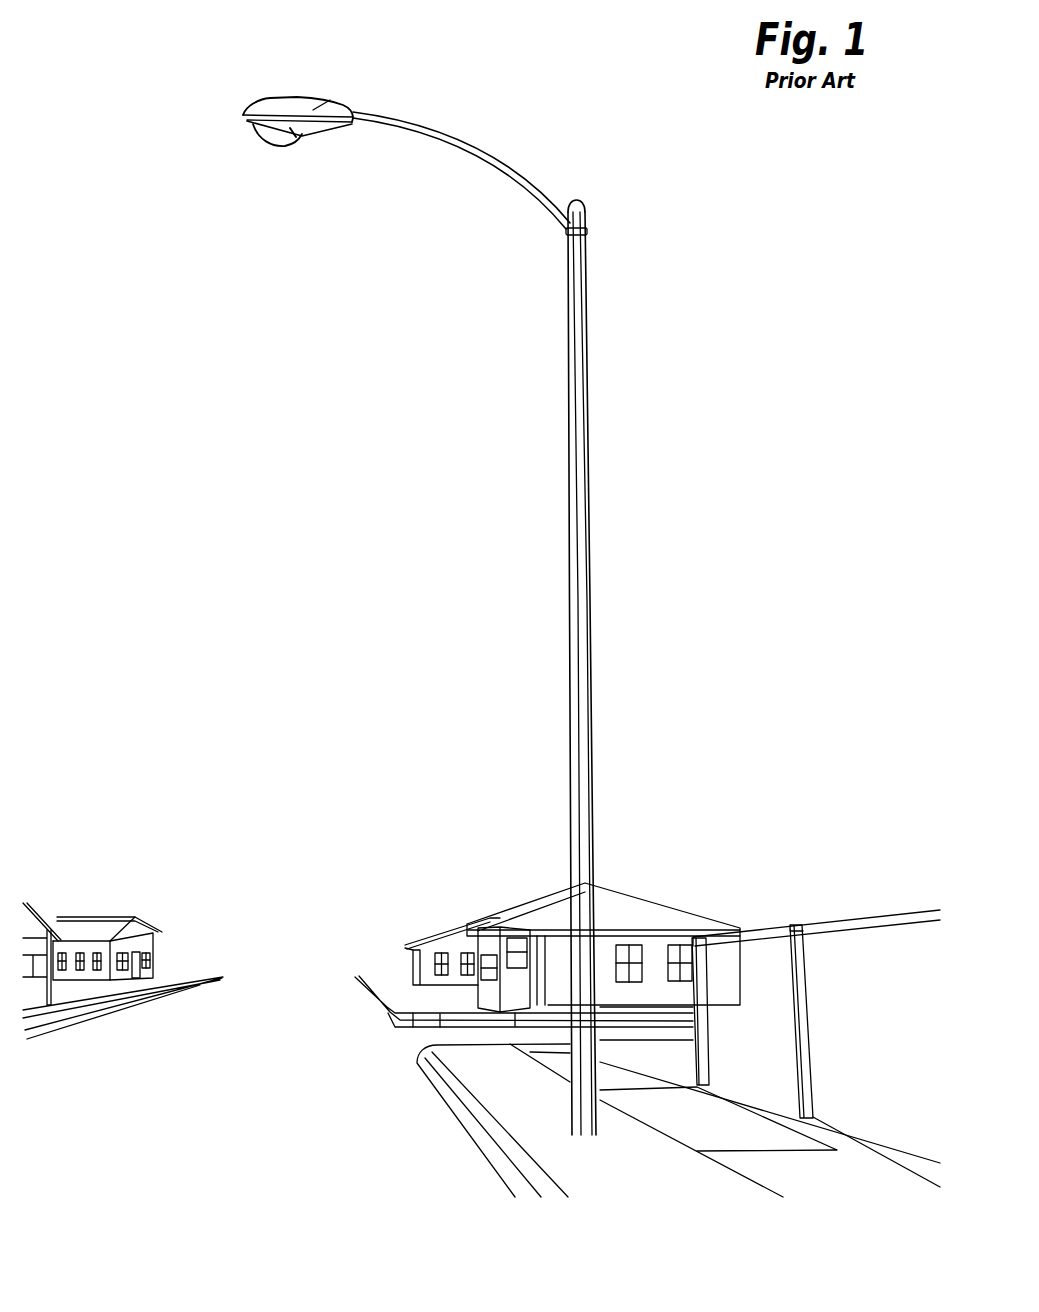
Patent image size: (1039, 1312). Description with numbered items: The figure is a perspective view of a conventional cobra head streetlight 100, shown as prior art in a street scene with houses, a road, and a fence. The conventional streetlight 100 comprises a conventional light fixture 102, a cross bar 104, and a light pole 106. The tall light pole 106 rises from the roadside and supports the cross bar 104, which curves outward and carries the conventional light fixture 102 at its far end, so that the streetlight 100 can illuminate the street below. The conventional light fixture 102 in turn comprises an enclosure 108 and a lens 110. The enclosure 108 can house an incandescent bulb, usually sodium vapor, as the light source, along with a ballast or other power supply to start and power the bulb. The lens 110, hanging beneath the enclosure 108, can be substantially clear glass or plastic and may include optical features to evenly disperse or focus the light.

The conventional streetlight 100 is at (155, 63).
The conventional light fixture 102 is at (307, 71).
The cross bar 104 is at (452, 134).
The light pole 106 is at (585, 204).
The enclosure 108 is at (317, 136).
The lens 110 is at (273, 150).